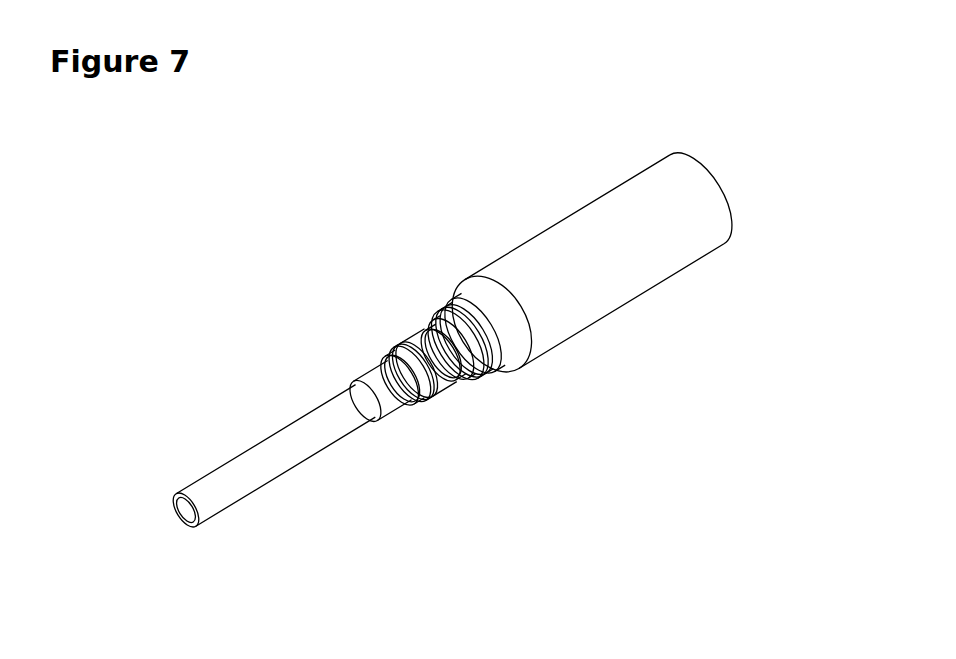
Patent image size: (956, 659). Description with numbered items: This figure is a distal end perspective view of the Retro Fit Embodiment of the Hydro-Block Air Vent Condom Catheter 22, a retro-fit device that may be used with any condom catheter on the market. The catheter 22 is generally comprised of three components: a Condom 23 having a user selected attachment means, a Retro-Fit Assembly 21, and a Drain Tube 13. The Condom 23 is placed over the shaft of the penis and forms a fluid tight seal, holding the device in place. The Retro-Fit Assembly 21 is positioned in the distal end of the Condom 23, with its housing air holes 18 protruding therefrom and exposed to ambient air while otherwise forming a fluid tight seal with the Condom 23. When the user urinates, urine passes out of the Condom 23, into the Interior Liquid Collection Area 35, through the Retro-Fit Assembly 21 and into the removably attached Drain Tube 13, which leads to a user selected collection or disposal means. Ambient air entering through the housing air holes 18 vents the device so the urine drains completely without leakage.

The Drain Tube 13 is at (283, 446).
The Retro-Fit Assembly Housing Air Holes 18 is at (395, 349).
The Retro-Fit Assembly 21 is at (417, 333).
The Retro Fit Embodiment Hydro-Block Air Vent Condom Catheter 22 is at (75, 440).
The Condom 23 is at (547, 241).
The Interior Liquid Collection Area 35 is at (504, 359).